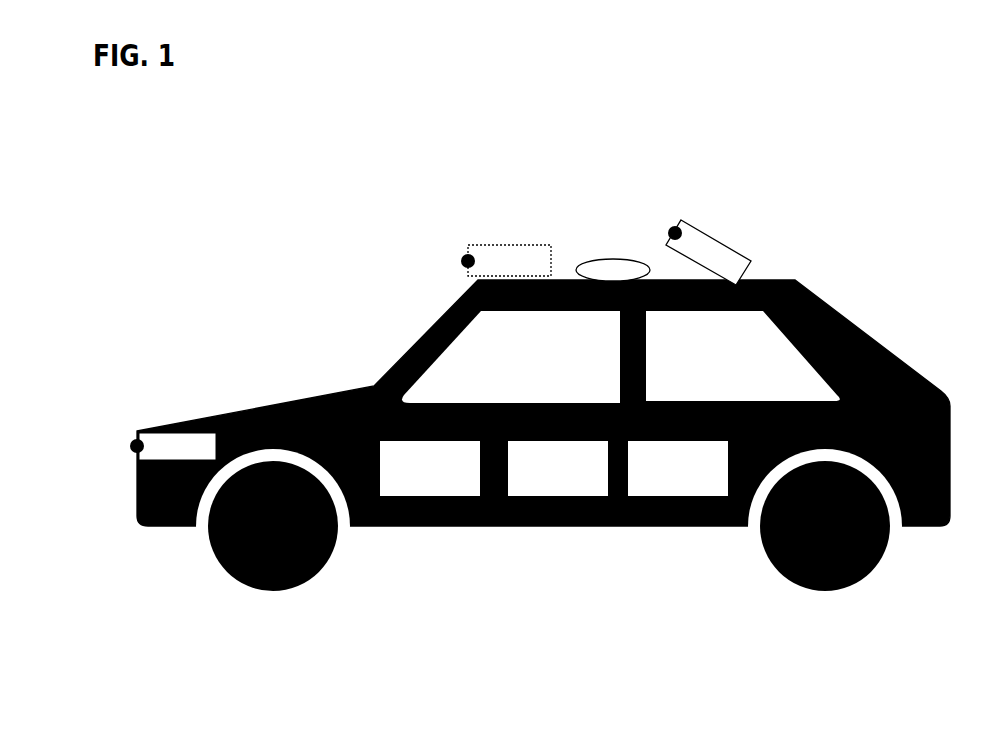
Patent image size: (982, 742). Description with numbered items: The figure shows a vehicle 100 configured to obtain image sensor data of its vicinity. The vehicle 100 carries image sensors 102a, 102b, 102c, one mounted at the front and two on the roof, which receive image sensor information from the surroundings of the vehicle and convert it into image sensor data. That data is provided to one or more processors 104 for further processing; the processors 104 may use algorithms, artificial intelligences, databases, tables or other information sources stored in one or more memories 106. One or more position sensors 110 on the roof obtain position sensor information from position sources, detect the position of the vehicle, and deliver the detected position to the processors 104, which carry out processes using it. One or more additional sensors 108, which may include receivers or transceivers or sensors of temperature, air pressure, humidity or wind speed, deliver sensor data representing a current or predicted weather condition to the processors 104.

The vehicle 100 is at (198, 630).
The image sensor 102a is at (106, 473).
The image sensor 102b is at (448, 222).
The image sensor 102c is at (709, 205).
The processors 104 is at (430, 468).
The memories 106 is at (558, 468).
The additional sensors 108 is at (678, 468).
The position sensors 110 is at (590, 235).